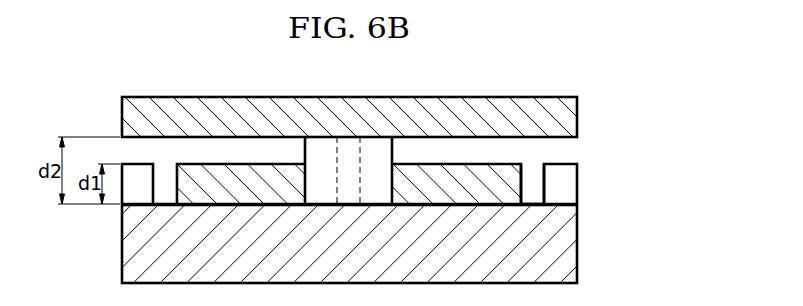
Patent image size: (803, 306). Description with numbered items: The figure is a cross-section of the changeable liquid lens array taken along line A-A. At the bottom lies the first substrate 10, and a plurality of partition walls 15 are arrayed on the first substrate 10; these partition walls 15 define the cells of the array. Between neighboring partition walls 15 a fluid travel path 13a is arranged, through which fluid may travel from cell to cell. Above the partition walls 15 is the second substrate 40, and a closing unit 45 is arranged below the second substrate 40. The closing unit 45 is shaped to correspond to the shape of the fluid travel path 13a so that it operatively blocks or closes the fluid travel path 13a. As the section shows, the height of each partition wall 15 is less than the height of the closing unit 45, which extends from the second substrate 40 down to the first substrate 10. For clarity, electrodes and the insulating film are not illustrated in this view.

The first substrate 10 is at (577, 246).
The partition wall 15 is at (577, 186).
The fluid travel path 13a is at (532, 177).
The second substrate 40 is at (577, 119).
The closing unit 45 is at (388, 152).